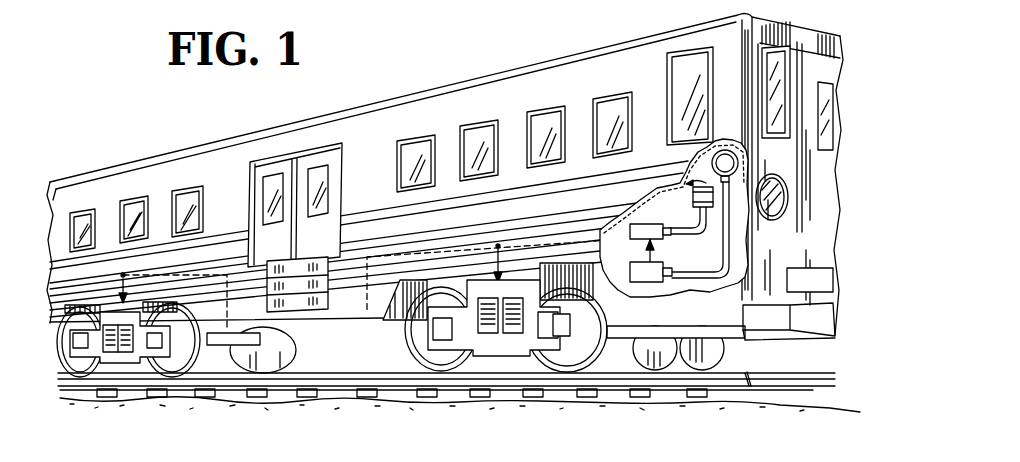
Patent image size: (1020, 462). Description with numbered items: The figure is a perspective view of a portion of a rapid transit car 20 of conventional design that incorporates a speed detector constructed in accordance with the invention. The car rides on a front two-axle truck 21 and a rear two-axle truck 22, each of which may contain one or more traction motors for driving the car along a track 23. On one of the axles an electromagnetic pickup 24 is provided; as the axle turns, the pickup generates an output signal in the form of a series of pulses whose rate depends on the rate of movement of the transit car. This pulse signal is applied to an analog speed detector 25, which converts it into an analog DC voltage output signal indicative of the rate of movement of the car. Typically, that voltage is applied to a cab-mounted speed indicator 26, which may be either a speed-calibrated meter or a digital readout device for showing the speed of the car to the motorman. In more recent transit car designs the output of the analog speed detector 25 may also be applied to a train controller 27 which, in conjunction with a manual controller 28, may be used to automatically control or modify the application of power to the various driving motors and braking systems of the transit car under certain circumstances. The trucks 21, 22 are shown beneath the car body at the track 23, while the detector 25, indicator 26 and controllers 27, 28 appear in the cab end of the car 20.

The rapid transit car 20 is at (413, 97).
The front two-axle truck 21 is at (505, 345).
The rear two-axle truck 22 is at (123, 358).
The track 23 is at (615, 380).
The electromagnetic pickup 24 is at (548, 333).
The analog speed detector 25 is at (663, 264).
The cab-mounted speed indicator 26 is at (732, 163).
The train controller 27 is at (642, 226).
The manual controller 28 is at (717, 192).